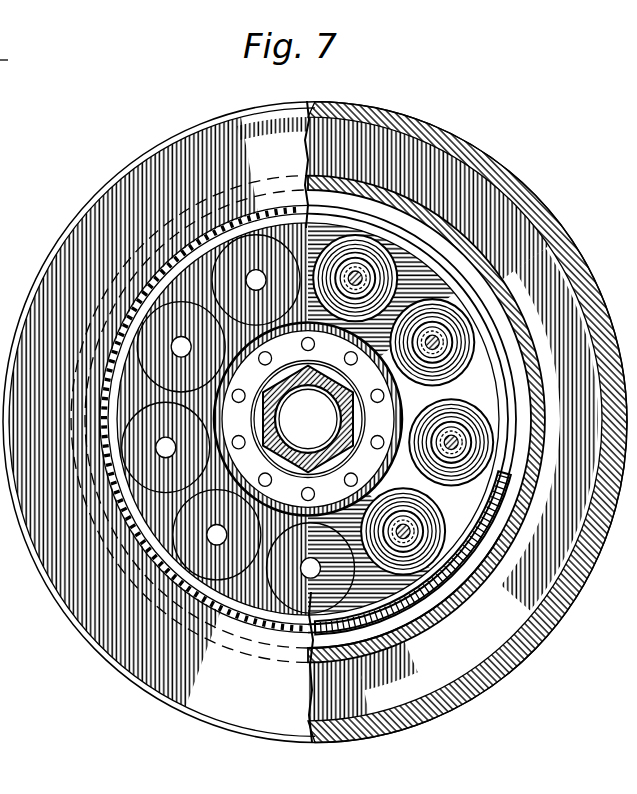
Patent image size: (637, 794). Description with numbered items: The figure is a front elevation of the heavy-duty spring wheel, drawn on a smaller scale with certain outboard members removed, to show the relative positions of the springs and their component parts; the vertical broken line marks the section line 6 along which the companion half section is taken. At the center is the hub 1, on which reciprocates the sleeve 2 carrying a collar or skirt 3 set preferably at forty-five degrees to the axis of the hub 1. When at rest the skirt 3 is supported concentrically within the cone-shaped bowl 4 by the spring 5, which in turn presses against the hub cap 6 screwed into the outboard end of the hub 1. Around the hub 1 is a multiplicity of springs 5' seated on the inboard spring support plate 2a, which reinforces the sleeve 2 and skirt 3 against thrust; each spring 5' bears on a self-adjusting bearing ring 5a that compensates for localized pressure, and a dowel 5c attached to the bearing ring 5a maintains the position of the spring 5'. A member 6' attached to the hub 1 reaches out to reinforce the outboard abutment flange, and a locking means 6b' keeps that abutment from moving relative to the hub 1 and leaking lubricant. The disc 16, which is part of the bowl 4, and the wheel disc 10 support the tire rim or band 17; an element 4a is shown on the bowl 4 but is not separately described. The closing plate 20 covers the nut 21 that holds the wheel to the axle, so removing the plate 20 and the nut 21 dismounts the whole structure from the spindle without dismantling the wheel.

The hub 1 is at (266, 491).
The sleeve 2 is at (388, 392).
The inboard spring support plate 2a is at (475, 380).
The collar or skirt 3 is at (440, 330).
The cone-shaped bowl 4 is at (455, 592).
The ring flange 4a is at (478, 550).
The spring 5 is at (238, 436).
The springs 5' is at (299, 386).
The self-adjusting bearing ring 5a is at (300, 590).
The dowel 5c is at (308, 418).
The hub cap 6 is at (305, 423).
The reinforcing member 6' is at (11, 172).
The locking means 6b' is at (18, 206).
The wheel disc 10 is at (438, 668).
The disc 16 is at (172, 650).
The tire rim or band 17 is at (172, 135).
The closing plate 20 is at (15, 81).
The nut 21 is at (343, 413).